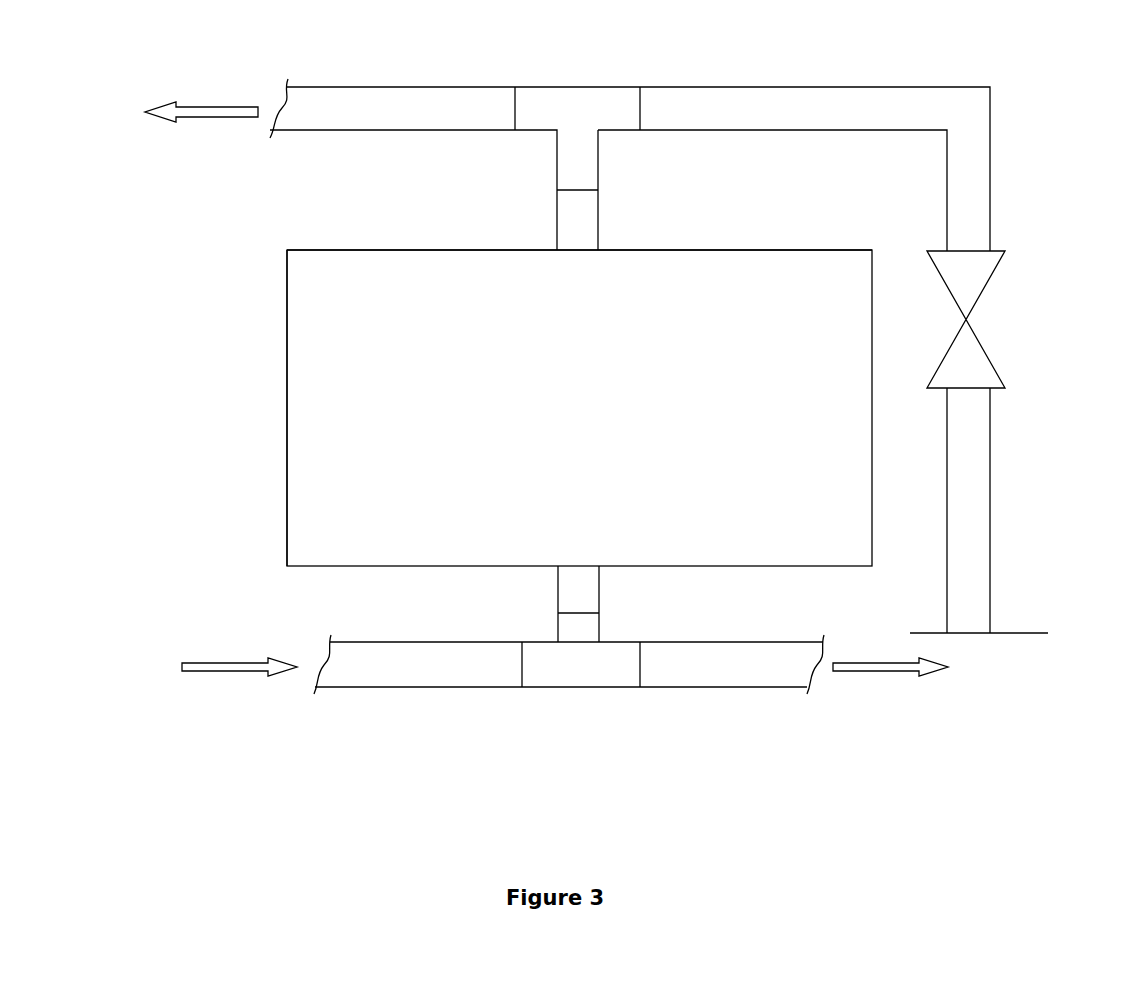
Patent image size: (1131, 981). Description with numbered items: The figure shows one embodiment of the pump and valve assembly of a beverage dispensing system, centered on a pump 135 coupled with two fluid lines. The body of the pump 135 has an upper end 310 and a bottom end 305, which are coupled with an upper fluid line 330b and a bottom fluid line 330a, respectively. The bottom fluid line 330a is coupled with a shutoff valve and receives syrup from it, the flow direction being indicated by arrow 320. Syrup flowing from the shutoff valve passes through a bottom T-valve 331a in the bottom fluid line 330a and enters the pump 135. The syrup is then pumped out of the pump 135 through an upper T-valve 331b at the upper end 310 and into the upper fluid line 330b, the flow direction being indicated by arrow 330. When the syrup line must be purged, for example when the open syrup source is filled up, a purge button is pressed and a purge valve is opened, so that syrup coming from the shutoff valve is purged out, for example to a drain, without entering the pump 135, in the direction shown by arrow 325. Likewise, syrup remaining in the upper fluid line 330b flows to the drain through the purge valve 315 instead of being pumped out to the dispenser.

The pump 135 is at (285, 408).
The bottom end 305 is at (302, 566).
The upper end 310 is at (347, 250).
The purge valve 315 is at (985, 286).
The arrow 320 is at (245, 673).
The arrow 325 is at (896, 673).
The arrow 330 is at (192, 118).
The bottom fluid line 330a is at (478, 642).
The upper fluid line 330b is at (472, 86).
The bottom T-valve 331a is at (590, 663).
The upper T-valve 331b is at (628, 103).